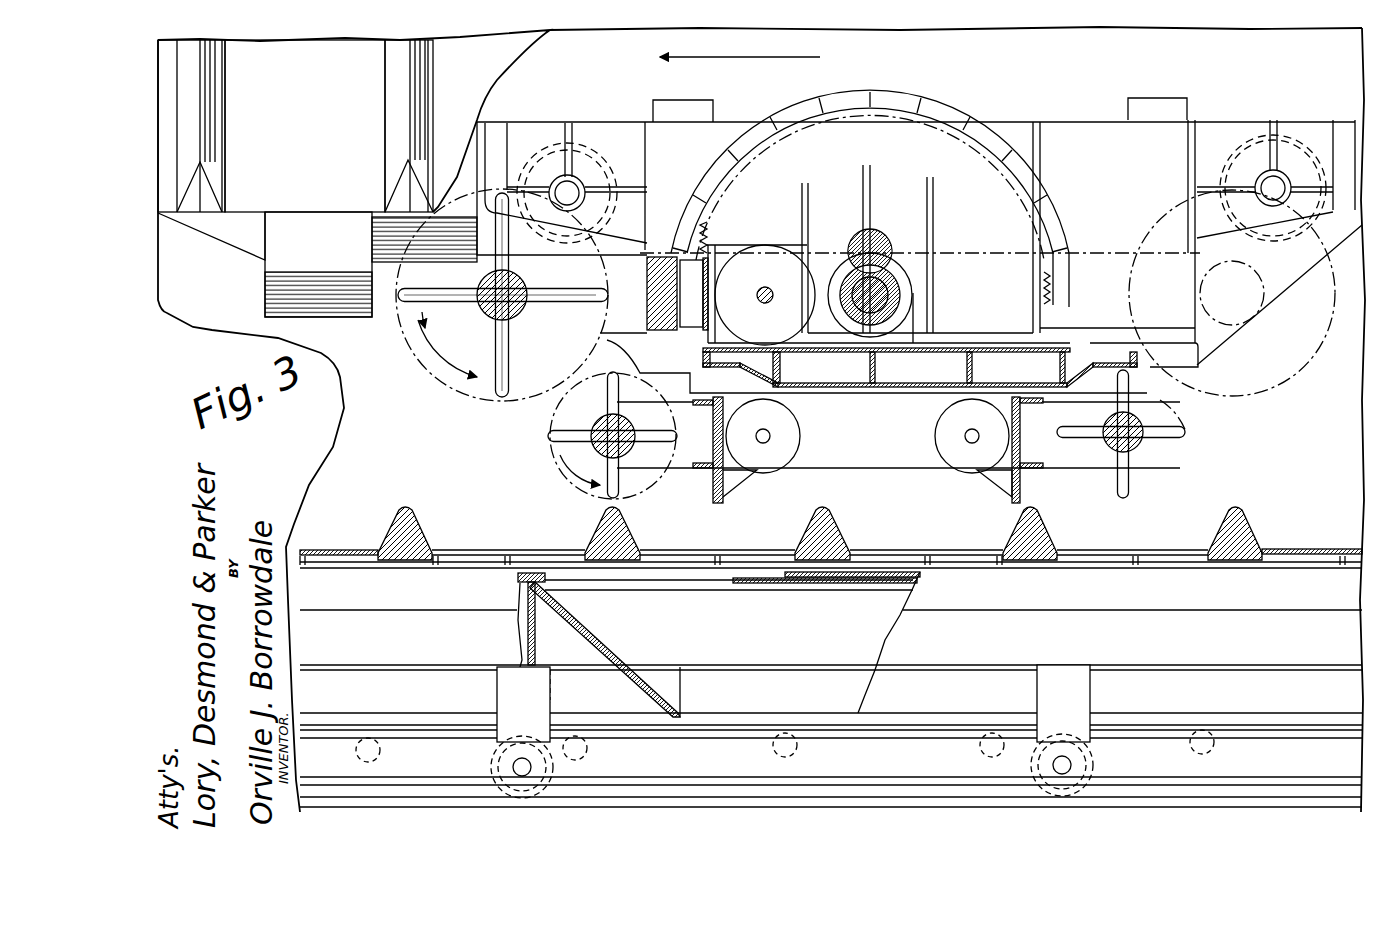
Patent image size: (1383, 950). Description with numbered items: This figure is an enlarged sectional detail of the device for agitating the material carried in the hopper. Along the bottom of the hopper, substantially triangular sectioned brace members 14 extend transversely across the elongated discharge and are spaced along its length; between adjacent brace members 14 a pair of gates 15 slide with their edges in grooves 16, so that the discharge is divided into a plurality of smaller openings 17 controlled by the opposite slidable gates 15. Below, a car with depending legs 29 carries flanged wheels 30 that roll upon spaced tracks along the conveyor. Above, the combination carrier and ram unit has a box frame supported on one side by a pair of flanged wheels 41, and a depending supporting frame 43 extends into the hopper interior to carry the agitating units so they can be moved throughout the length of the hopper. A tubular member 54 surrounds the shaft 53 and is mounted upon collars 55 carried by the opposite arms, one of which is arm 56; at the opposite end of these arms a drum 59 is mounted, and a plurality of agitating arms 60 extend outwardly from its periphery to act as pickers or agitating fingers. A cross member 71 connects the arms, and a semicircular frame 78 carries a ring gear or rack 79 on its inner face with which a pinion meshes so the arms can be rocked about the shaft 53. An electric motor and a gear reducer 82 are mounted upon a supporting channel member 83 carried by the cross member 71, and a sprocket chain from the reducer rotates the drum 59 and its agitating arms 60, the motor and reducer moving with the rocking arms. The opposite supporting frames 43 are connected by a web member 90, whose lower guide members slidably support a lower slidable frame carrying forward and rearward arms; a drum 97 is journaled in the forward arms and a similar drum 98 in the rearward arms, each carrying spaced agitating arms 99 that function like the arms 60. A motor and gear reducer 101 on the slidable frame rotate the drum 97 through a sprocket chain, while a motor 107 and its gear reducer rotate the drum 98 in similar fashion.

The brace member 14 is at (836, 528).
The gate 15 is at (1136, 553).
The groove 16 is at (1050, 540).
The smaller opening 17 is at (731, 546).
The depending leg 29 is at (1092, 690).
The flanged wheel 30 is at (1090, 768).
The flanged wheel 41 is at (587, 143).
The depending supporting frame 43 is at (1098, 162).
The shaft 53 is at (872, 280).
The tubular member 54 is at (892, 285).
The collar 55 is at (900, 305).
The arm 56 is at (820, 262).
The drum 59 is at (487, 315).
The agitating arm 60 is at (420, 302).
The cross member 71 is at (647, 315).
The semicircular frame 78 is at (905, 93).
The ring gear or rack 79 is at (710, 228).
The gear reducer 82 is at (765, 262).
The supporting channel member 83 is at (692, 330).
The web member 90 is at (920, 367).
The drum 97 is at (575, 420).
The drum 98 is at (1150, 425).
The agitating arm 99 is at (560, 445).
The gear reducer 101 is at (800, 431).
The motor 107 is at (940, 425).